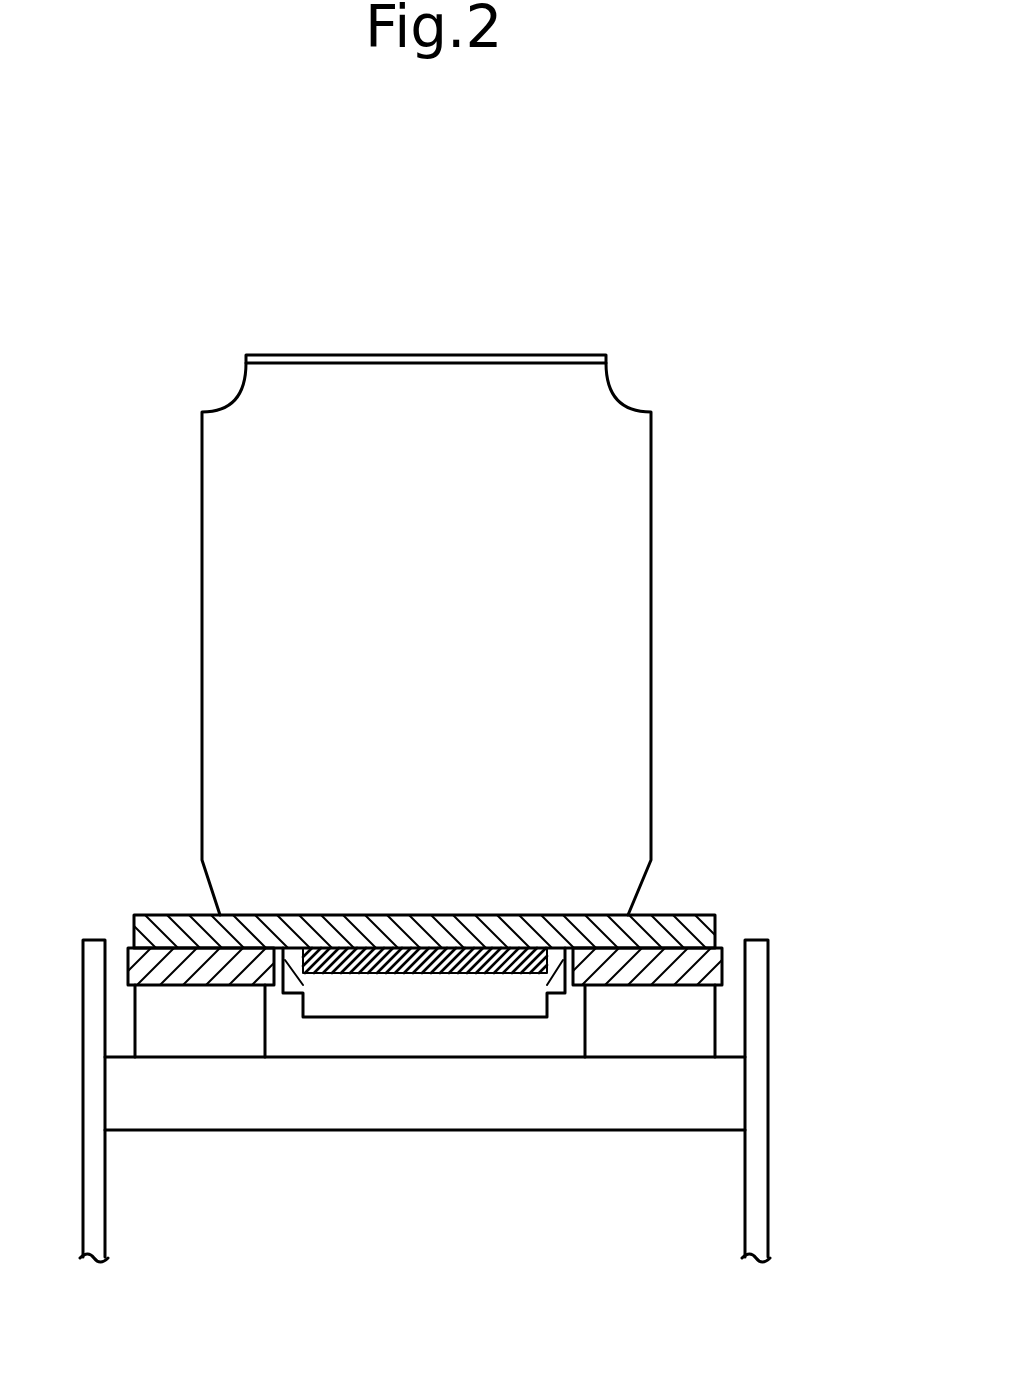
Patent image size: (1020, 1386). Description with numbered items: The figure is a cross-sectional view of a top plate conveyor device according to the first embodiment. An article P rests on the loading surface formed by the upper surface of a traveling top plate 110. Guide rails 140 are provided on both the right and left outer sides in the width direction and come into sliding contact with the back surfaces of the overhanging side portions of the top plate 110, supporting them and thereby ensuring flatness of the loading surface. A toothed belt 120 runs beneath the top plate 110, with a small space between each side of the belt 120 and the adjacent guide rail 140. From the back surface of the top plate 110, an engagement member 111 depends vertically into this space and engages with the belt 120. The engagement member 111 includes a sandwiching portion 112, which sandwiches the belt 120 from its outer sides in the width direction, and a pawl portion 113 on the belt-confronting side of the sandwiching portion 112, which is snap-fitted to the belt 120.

The articles P is at (635, 565).
The top plate 110 is at (665, 928).
The guide rail 140 is at (697, 963).
The engagement member 111 is at (370, 1132).
The sandwiching portion 112 is at (285, 975).
The pawl portion 113 is at (290, 965).
The toothed belt 120 is at (445, 1002).